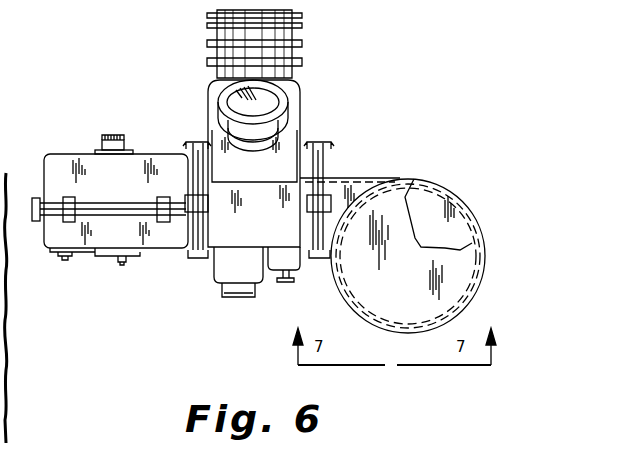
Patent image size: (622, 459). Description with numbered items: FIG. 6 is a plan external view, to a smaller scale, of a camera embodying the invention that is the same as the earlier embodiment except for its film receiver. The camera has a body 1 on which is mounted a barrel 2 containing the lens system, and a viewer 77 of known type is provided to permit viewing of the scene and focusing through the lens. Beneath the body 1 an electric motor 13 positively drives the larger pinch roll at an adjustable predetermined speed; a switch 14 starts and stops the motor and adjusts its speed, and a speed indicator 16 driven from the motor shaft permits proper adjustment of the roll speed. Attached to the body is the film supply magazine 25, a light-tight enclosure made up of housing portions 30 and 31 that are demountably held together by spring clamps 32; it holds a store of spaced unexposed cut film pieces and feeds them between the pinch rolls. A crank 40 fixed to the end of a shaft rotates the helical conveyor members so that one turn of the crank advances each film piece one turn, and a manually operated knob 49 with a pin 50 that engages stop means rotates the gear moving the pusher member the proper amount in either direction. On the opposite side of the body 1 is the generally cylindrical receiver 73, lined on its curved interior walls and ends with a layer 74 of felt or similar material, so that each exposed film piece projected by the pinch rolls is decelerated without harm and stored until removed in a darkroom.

The body 1 is at (218, 248).
The barrel 2 is at (312, 38).
The electric motor 13 is at (228, 284).
The switch 14 is at (300, 266).
The speed indicator 16 is at (246, 298).
The film supply magazine 25 is at (86, 138).
The housing portion 30 is at (50, 248).
The housing portion 31 is at (73, 153).
The spring clamps 32 is at (36, 198).
The crank 40 is at (106, 258).
The knob 49 is at (112, 140).
The pin 50 is at (130, 150).
The receiver 73 is at (350, 178).
The layer of felt or similar material 74 is at (446, 216).
The viewer 77 is at (300, 120).